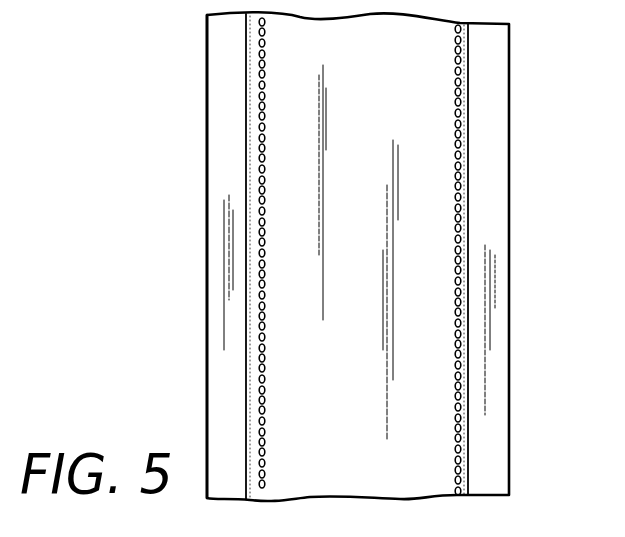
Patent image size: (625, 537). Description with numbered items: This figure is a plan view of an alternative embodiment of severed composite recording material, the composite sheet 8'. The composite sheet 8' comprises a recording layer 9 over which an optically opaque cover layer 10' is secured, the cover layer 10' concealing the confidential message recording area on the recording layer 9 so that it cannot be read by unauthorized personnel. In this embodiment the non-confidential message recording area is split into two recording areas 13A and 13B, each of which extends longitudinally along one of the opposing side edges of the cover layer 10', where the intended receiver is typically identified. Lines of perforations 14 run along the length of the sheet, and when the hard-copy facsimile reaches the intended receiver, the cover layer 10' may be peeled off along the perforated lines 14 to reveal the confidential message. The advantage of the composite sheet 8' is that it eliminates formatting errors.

The composite sheet 8' is at (292, 256).
The recording layer 9 is at (207, 148).
The cover layer 10' is at (316, 243).
The non-confidential message recording area 13A is at (227, 102).
The non-confidential message recording area 13B is at (505, 200).
The perforated lines 14 is at (262, 278).